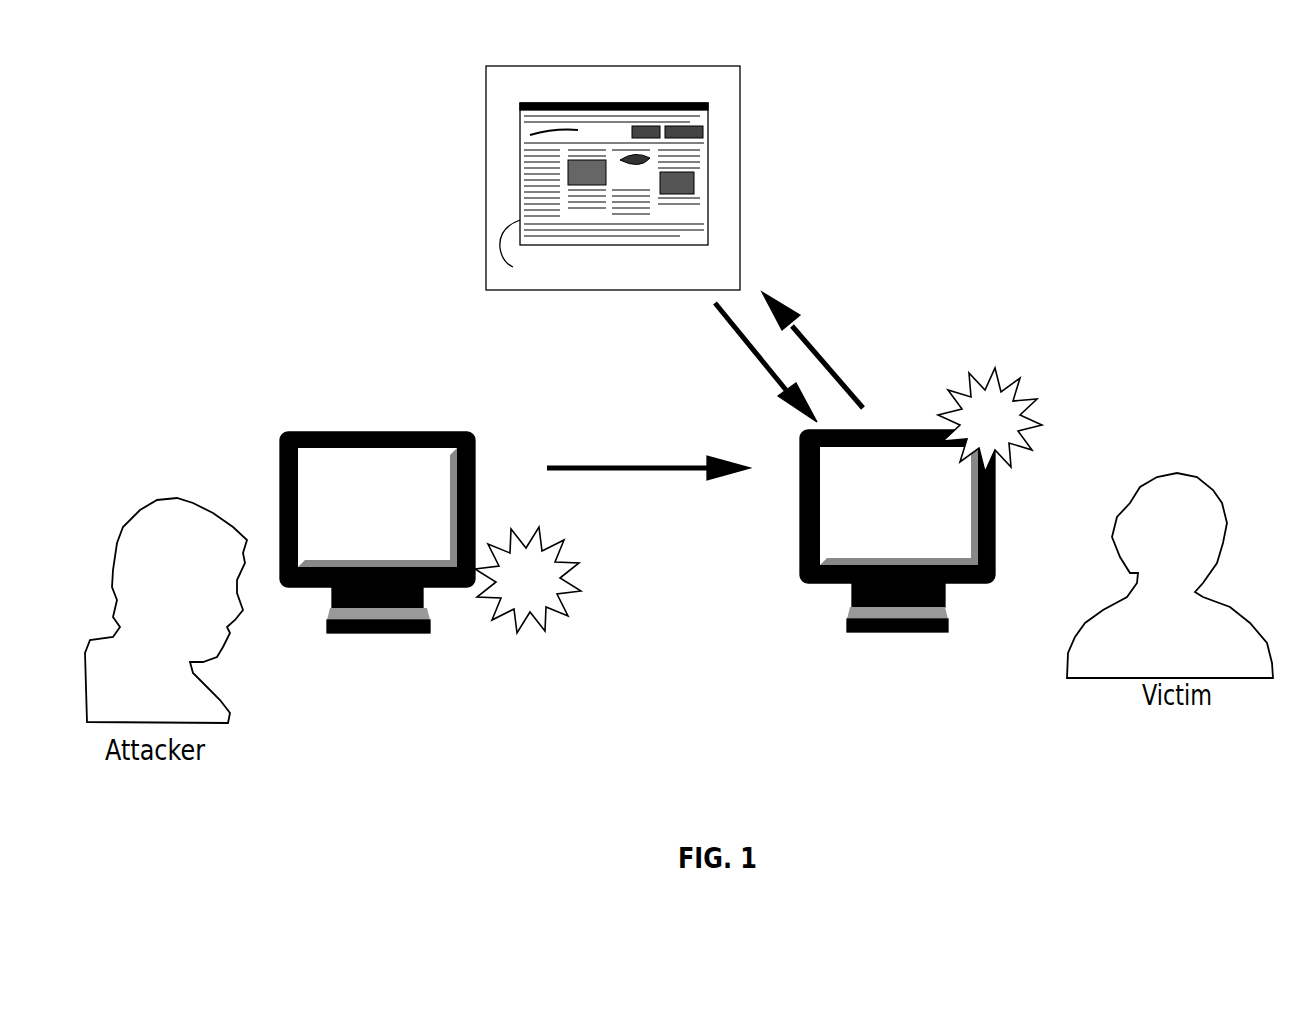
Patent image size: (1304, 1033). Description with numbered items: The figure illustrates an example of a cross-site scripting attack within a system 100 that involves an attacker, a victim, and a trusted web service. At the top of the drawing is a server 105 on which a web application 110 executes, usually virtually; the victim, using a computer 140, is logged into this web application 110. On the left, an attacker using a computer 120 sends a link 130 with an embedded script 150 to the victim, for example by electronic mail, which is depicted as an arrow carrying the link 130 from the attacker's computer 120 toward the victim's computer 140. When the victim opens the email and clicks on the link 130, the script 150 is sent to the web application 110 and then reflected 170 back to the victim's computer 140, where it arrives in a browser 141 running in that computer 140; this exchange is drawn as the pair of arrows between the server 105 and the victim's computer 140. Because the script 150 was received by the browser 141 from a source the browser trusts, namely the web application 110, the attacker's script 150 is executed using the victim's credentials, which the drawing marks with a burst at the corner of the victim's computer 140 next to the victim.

The system 100 is at (1067, 140).
The server 105 is at (739, 123).
The web application 110 is at (707, 210).
The attacker computer 120 is at (388, 633).
The link 130 is at (683, 490).
The victim computer 140 is at (831, 593).
The browser 141 is at (917, 713).
The script 150 is at (693, 552).
The reflection 170 is at (826, 334).